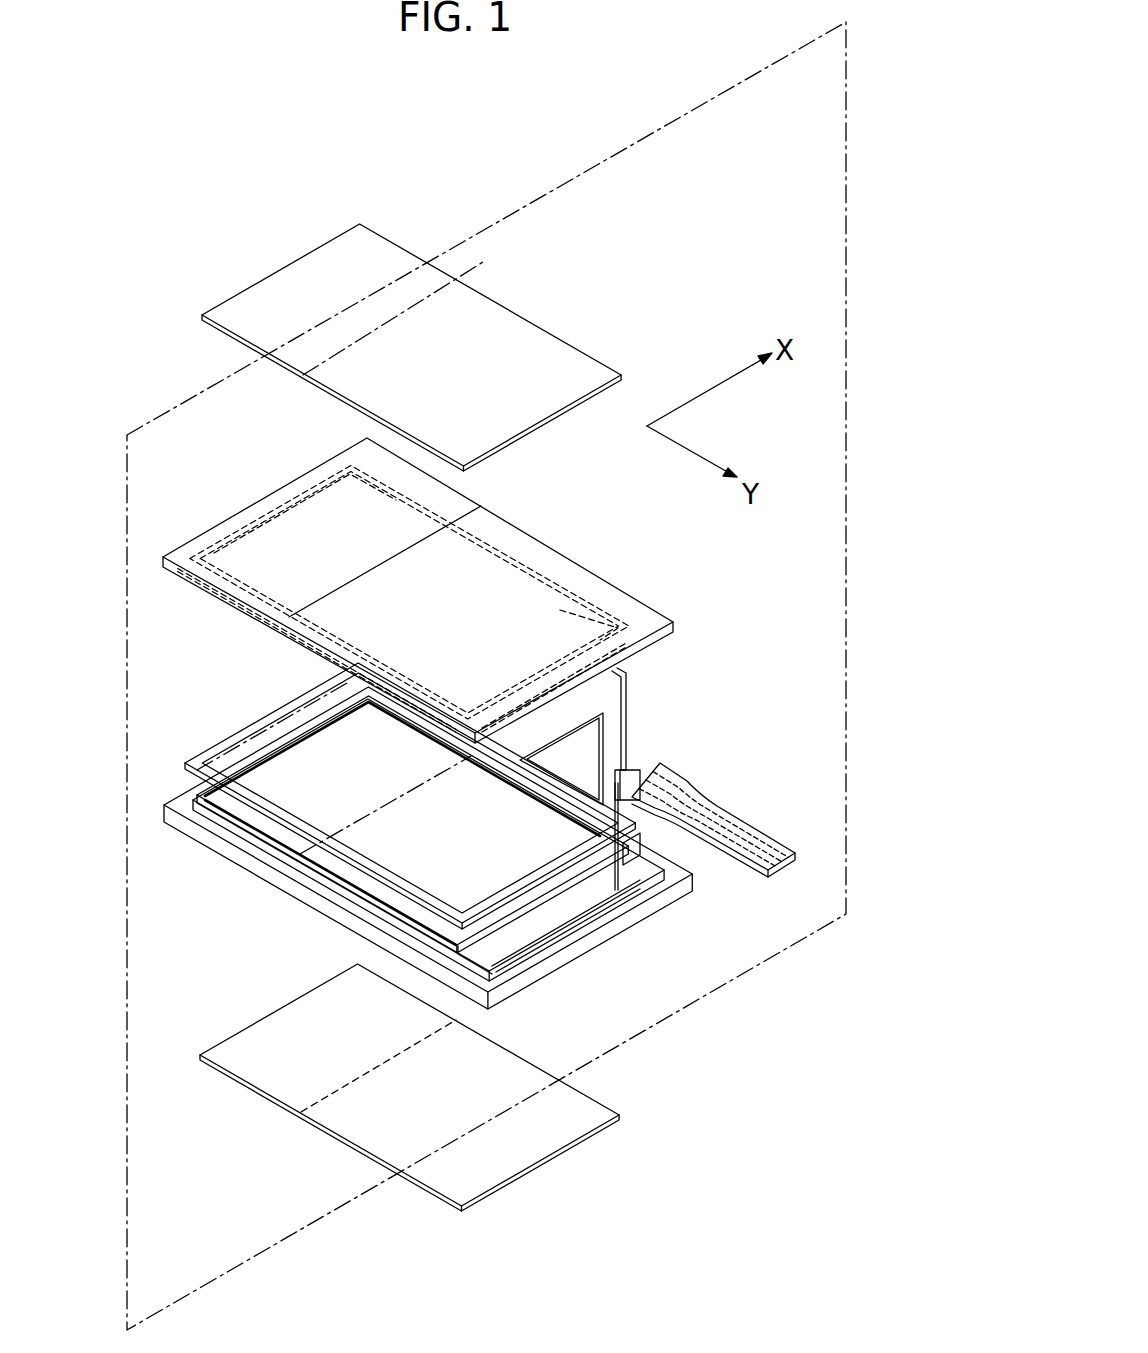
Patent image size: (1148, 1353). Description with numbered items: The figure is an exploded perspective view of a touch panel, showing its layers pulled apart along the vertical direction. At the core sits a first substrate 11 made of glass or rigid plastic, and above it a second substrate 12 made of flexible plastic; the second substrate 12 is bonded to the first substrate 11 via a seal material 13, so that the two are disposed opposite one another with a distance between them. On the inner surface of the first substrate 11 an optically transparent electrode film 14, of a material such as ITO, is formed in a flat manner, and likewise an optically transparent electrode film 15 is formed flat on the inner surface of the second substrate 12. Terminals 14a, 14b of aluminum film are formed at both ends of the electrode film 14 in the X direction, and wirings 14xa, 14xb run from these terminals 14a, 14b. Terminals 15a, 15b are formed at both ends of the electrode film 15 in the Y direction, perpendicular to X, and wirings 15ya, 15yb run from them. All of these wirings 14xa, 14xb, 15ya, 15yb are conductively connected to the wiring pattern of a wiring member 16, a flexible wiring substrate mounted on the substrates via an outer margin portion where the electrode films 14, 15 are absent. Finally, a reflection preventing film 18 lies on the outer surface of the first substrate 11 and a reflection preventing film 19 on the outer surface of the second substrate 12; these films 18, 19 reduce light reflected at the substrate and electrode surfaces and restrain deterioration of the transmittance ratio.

The first substrate 11 is at (607, 947).
The second substrate 12 is at (240, 510).
The seal material 13 is at (257, 717).
The electrode film 14 is at (444, 860).
The terminal 14a is at (256, 836).
The terminal 14b is at (511, 786).
The wiring 14xa is at (508, 971).
The wiring 14xb is at (644, 872).
The electrode film 15 is at (547, 577).
The terminal 15a is at (313, 492).
The terminal 15b is at (603, 619).
The wiring 15ya is at (603, 740).
The wiring 15yb is at (627, 697).
The wiring member 16 is at (728, 865).
The reflection preventing film 18 is at (548, 1163).
The reflection preventing film 19 is at (302, 258).